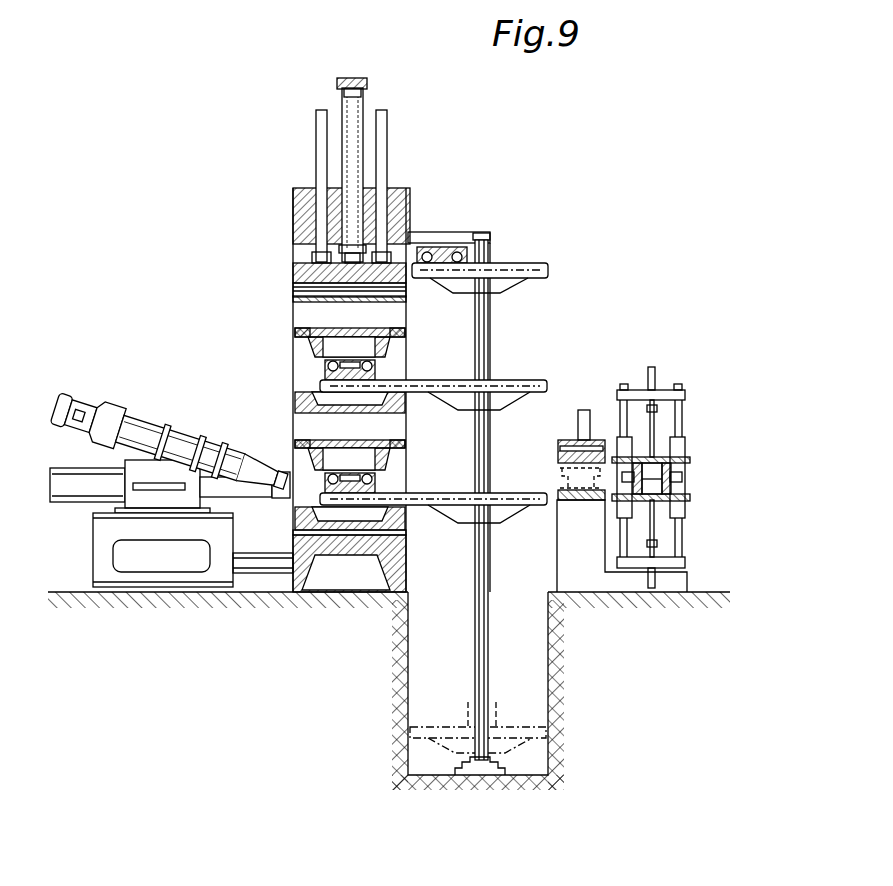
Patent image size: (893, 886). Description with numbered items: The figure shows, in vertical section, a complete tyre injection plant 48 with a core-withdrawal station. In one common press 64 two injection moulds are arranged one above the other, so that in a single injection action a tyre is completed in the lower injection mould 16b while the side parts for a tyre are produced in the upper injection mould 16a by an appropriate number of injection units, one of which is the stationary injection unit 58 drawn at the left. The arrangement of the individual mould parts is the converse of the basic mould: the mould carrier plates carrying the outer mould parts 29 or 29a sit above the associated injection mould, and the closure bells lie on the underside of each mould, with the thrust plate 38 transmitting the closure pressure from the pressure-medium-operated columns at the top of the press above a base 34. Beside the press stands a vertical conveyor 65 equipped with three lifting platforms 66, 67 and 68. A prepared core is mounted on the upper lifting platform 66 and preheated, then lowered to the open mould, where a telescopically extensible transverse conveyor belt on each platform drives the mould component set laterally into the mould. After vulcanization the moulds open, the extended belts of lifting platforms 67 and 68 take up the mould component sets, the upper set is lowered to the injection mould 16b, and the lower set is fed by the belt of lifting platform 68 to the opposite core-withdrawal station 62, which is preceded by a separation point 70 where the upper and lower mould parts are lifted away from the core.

The tyre injection plant 48 is at (492, 170).
The common press 64 is at (398, 176).
The thrust plate 38 is at (293, 272).
The vertical conveyor 65 is at (532, 332).
The lifting platform 66 is at (548, 272).
The upper injection mould 16a is at (337, 357).
The lower injection mould 16b is at (351, 522).
The outer mould part 29 is at (387, 347).
The outer mould part 29a is at (390, 466).
The lifting platform 67 is at (540, 385).
The lifting platform 68 is at (508, 494).
The base 34 is at (333, 557).
The injection unit 58 is at (137, 425).
The core-withdrawal station 62 is at (700, 414).
The separation point 70 is at (592, 578).